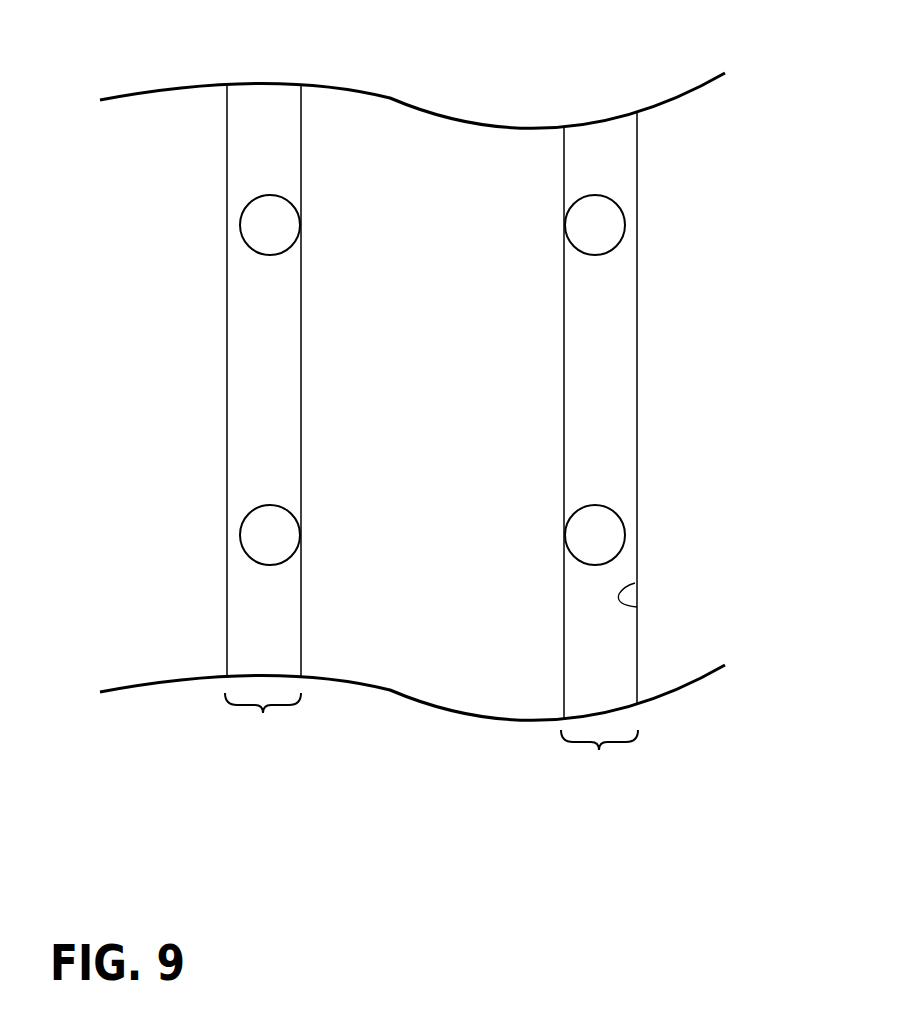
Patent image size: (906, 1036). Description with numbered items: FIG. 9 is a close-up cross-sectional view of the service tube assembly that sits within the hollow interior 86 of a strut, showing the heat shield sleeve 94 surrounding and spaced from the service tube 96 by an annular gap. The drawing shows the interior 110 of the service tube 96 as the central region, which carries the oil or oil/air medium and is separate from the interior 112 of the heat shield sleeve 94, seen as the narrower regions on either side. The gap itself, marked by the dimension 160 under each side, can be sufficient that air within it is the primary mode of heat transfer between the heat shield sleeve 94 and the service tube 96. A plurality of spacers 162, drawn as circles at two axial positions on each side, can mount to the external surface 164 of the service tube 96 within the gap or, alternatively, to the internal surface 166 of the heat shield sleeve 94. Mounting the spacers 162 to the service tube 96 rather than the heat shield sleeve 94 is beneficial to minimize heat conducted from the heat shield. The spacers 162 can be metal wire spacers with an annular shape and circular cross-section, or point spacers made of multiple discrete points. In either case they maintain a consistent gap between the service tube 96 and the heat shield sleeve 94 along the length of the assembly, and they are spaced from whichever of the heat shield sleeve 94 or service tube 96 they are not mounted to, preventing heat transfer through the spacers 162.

The hollow interior 86 is at (148, 251).
The heat shield sleeve 94 is at (225, 116).
The service tube 96 is at (300, 108).
The interior of the service tube 110 is at (421, 356).
The interior of the heat shield sleeve 112 is at (250, 347).
The strip width 160 is at (431, 741).
The spacers 162 is at (260, 232).
The external surface 164 is at (565, 455).
The internal surface 166 is at (637, 607).